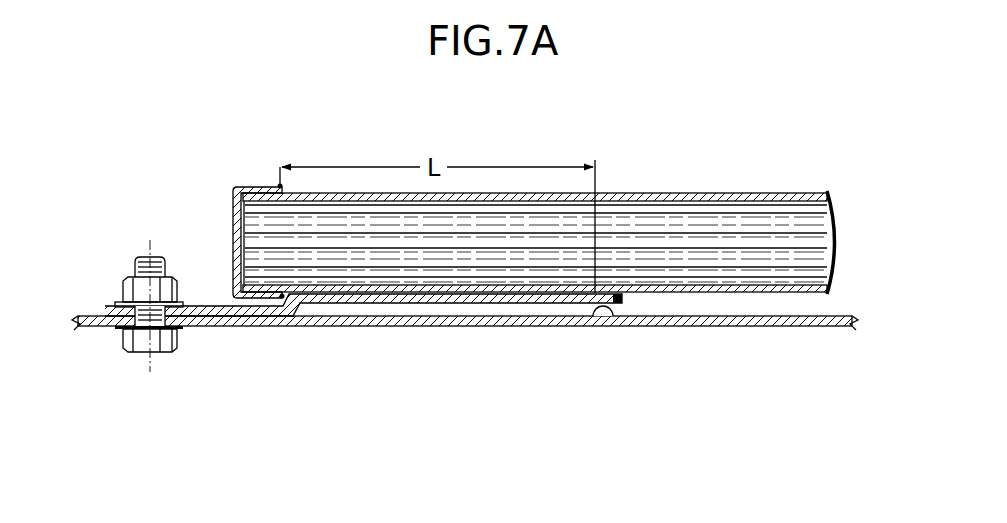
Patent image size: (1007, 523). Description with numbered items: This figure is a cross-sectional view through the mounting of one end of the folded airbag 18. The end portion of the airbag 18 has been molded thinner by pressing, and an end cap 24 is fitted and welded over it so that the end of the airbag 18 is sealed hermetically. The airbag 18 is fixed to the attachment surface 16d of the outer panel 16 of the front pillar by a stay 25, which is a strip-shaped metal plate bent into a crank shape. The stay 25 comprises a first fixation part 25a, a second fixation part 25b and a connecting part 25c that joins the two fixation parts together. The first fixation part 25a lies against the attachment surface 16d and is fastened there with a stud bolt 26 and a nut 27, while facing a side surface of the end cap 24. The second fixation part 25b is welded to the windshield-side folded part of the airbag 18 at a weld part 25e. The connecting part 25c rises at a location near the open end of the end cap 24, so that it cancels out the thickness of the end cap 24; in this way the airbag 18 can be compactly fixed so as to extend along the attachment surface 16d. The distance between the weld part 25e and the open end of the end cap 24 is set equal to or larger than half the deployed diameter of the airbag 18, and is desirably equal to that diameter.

The outer panel 16 is at (465, 364).
The attachment surface 16d is at (613, 318).
The airbag 18 is at (707, 192).
The end cap 24 is at (232, 207).
The stay 25 is at (387, 273).
The first fixation part 25a is at (208, 306).
The second fixation part 25b is at (491, 304).
The connecting part 25c is at (303, 317).
The weld part 25e is at (595, 293).
The stud bolt 26 is at (143, 348).
The nut 27 is at (128, 283).